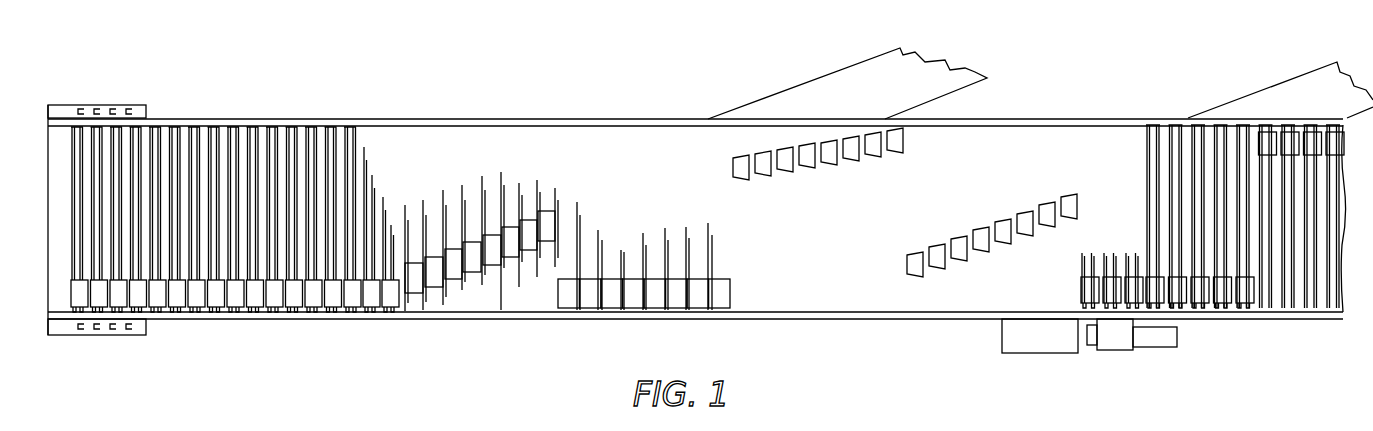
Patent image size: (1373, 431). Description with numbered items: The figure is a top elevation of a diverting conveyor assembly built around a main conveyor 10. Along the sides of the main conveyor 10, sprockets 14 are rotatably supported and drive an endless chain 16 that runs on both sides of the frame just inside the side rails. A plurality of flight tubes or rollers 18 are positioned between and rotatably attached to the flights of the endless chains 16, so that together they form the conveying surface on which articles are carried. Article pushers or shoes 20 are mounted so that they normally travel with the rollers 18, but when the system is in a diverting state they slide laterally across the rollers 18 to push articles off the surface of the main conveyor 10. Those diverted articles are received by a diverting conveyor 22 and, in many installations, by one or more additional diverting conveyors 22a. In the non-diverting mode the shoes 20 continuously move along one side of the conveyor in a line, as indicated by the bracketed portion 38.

The main conveyor 10 is at (424, 74).
The sprockets 14 is at (120, 112).
The endless chain 16 is at (552, 118).
The flight tubes or rollers 18 is at (326, 140).
The article pushers or shoes 20 is at (418, 284).
The diverting conveyor 22 is at (824, 74).
The additional diverting conveyor 22a is at (1245, 92).
The bracketed portion 38 is at (558, 322).